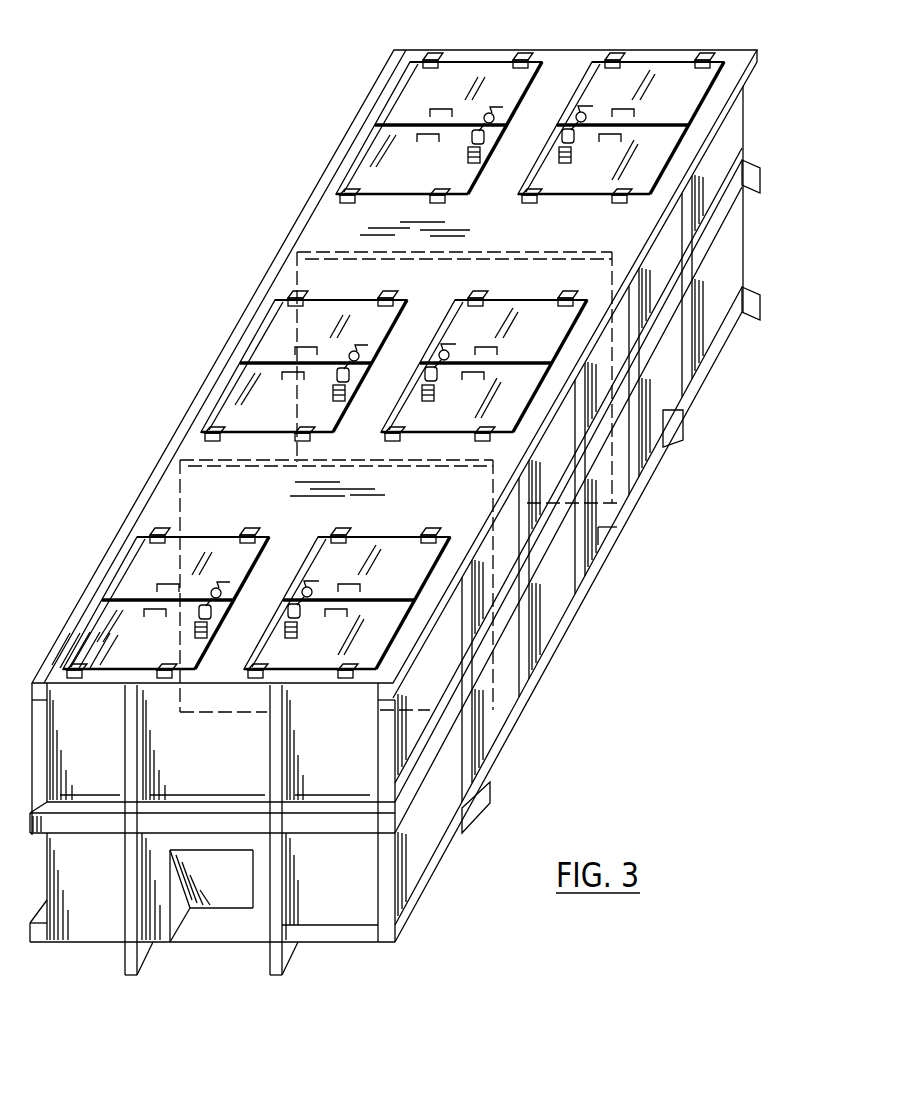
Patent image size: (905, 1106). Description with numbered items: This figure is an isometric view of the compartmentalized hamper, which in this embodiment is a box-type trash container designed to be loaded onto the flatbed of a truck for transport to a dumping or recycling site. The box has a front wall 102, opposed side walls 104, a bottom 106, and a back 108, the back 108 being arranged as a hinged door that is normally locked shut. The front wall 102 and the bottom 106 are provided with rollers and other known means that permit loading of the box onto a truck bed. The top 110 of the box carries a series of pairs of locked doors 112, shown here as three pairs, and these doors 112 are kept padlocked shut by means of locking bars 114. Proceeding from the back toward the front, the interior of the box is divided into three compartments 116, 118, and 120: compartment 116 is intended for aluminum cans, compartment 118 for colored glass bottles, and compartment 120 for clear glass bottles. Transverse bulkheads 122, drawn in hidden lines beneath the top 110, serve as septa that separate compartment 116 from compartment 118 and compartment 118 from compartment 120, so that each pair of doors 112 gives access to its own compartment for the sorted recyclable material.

The front wall 102 is at (70, 717).
The side walls 104 is at (647, 430).
The bottom 106 is at (610, 533).
The back 108 is at (755, 100).
The top 110 is at (297, 221).
The locked doors 112 is at (460, 72).
The locking bars 114 is at (470, 147).
The compartment 116 is at (313, 146).
The compartment 118 is at (197, 355).
The compartment 120 is at (101, 543).
The transverse bulkheads 122 is at (296, 262).